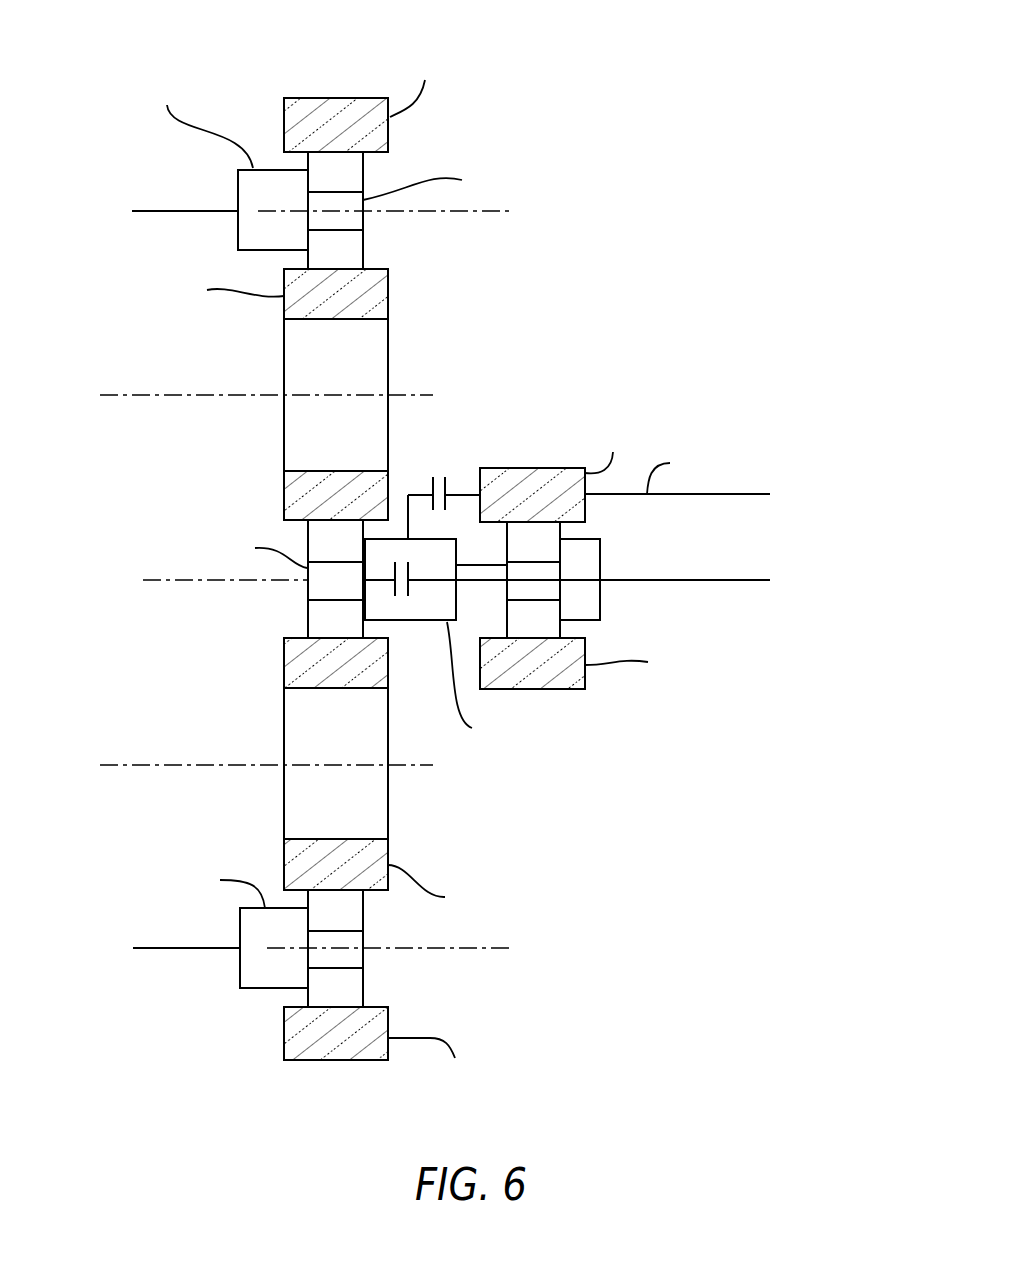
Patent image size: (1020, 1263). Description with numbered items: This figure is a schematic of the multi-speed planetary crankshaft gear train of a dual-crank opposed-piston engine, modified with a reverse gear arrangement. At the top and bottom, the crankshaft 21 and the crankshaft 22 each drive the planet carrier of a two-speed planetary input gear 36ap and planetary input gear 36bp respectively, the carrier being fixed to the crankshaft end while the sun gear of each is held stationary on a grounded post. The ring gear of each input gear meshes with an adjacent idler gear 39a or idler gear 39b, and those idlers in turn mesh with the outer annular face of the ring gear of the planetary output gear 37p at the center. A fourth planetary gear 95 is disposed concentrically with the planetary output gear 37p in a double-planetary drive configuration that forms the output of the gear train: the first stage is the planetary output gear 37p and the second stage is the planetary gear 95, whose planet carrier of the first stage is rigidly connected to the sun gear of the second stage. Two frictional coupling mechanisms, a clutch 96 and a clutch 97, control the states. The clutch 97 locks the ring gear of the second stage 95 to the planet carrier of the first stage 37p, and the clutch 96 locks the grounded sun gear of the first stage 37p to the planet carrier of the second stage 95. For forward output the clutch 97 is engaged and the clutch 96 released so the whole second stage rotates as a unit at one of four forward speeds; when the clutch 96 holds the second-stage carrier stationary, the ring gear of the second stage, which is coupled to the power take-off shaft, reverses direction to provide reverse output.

The crankshaft 21 is at (157, 211).
The crankshaft 22 is at (157, 948).
The planetary input gear 36ap is at (475, 153).
The planetary input gear 36bp is at (435, 992).
The planetary output gear 37p is at (138, 473).
The idler gear 39a is at (388, 332).
The idler gear 39b is at (388, 820).
The fourth planetary gear 95 is at (657, 455).
The frictional coupling mechanism 96 is at (400, 598).
The frictional coupling mechanism 97 is at (440, 477).